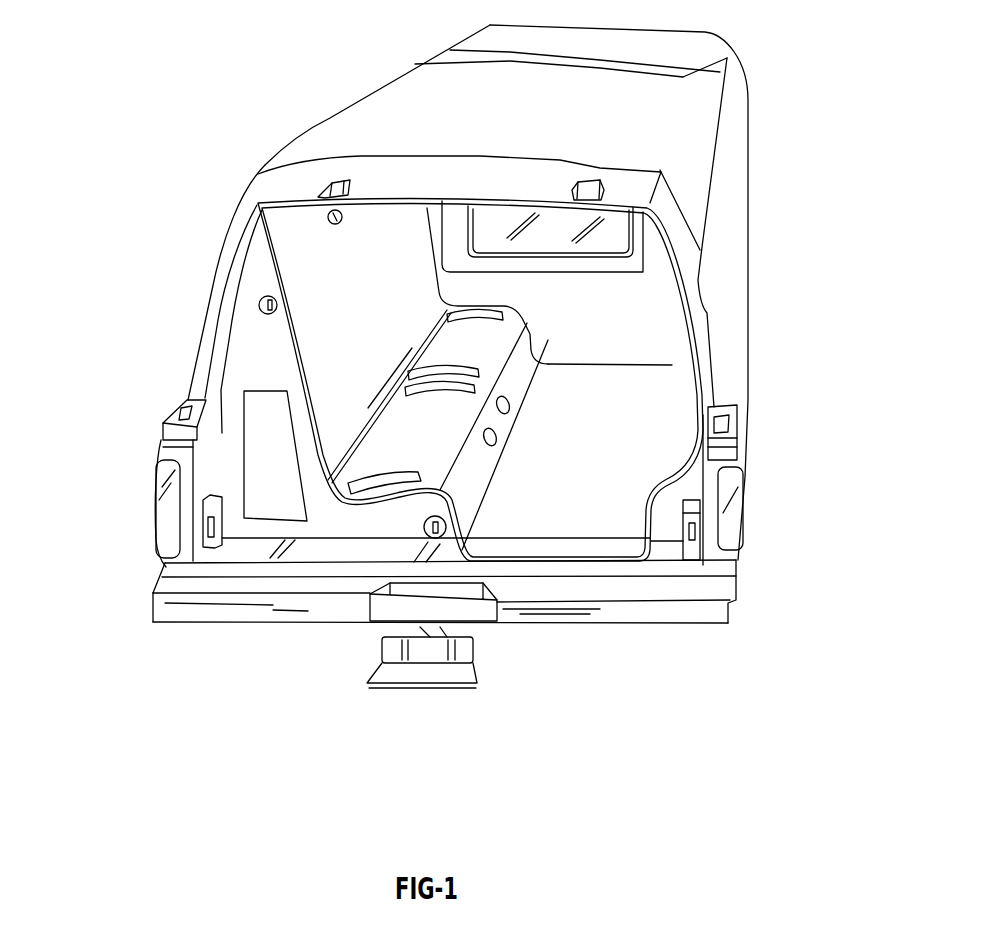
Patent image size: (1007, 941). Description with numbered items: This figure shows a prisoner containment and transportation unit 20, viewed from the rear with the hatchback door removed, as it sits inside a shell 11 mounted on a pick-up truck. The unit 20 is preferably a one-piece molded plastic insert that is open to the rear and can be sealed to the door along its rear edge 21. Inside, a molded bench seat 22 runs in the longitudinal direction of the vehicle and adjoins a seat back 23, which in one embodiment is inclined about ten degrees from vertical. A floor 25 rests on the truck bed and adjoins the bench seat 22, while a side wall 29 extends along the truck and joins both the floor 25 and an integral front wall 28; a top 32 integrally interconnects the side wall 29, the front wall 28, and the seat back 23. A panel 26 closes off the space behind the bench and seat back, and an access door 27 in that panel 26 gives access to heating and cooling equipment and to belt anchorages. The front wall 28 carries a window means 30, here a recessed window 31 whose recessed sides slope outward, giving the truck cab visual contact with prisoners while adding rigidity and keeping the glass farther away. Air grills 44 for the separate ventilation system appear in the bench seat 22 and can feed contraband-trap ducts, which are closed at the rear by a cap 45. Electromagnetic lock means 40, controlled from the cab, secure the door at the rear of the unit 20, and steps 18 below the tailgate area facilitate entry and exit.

The shell 11 is at (734, 163).
The steps 18 is at (465, 675).
The prisoner containment and transportation unit 20 is at (268, 261).
The rear edge 21 is at (308, 395).
The bench seat 22 is at (443, 448).
The seat back 23 is at (365, 298).
The floor 25 is at (588, 539).
The panel 26 is at (262, 358).
The access door 27 is at (260, 459).
The front wall 28 is at (642, 318).
The side wall 29 is at (696, 381).
The window means 30 is at (626, 266).
The recessed window 31 is at (629, 250).
The top 32 is at (392, 202).
The electromagnetic lock means 40 is at (208, 546).
The outlet and/or return air grills 44 is at (329, 213).
The cap 45 is at (258, 304).